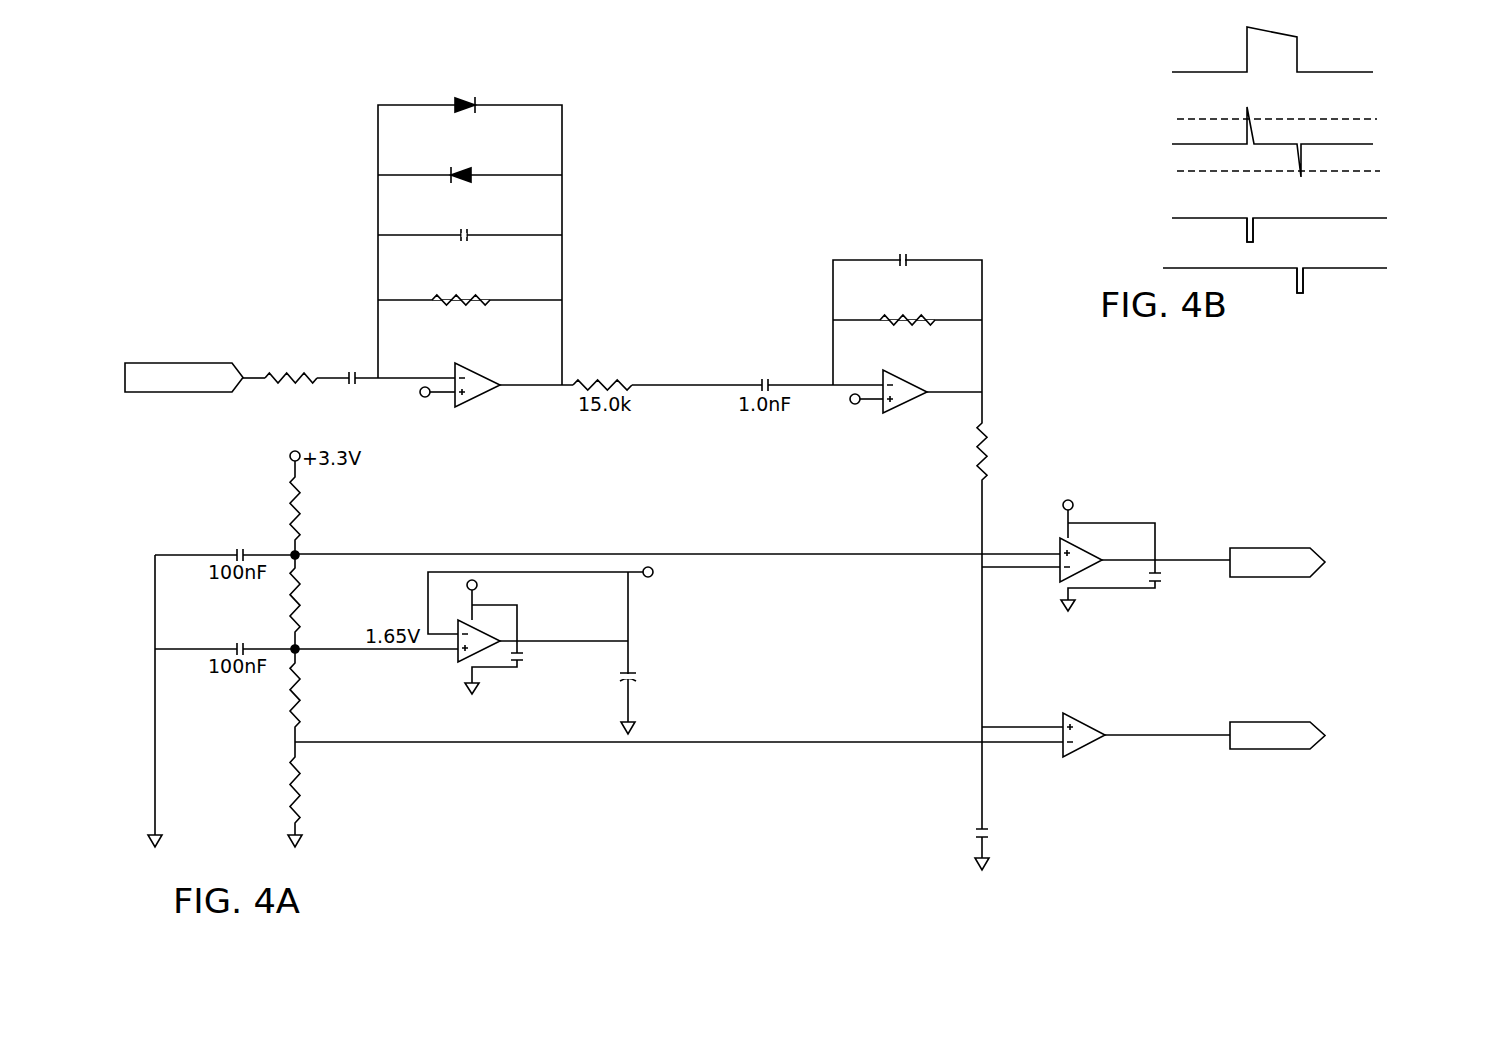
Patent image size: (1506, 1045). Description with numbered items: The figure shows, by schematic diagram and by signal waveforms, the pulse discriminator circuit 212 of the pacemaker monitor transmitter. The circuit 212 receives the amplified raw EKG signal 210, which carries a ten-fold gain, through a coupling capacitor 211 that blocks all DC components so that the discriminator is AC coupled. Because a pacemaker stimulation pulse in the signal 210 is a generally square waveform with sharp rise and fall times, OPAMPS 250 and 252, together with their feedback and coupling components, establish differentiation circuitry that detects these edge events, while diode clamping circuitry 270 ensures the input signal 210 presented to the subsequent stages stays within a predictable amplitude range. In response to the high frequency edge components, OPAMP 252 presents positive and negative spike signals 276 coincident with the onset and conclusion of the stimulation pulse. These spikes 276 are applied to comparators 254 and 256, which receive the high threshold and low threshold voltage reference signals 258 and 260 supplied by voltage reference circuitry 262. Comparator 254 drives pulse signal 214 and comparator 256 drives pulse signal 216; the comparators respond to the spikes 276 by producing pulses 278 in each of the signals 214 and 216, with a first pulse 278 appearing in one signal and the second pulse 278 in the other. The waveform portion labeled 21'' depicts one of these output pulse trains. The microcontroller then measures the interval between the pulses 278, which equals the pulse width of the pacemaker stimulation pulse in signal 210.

In FIG. 4A, the amplified raw EKG signal 210 is at (252, 378).
In FIG. 4B, the amplified raw EKG signal 210 is at (1308, 72).
In FIG. 4A, the capacitor 211 is at (332, 376).
In FIG. 4A, the pulse discriminator circuit 212 is at (262, 108).
In FIG. 4A, the pulse signal 214 is at (1200, 560).
In FIG. 4A, the pulse signal 216 is at (1207, 735).
In FIG. 4B, the pulse signal 216 is at (1313, 268).
In FIG. 4A, the OPAMP 250 is at (460, 408).
In FIG. 4A, the OPAMP 252 is at (918, 400).
In FIG. 4A, the comparator 254 is at (1058, 576).
In FIG. 4A, the comparator 256 is at (1075, 713).
In FIG. 4A, the high threshold voltage reference signal 258 is at (878, 553).
In FIG. 4B, the high threshold voltage reference signal 258 is at (1226, 118).
In FIG. 4A, the low threshold voltage reference signal 260 is at (920, 742).
In FIG. 4B, the low threshold voltage reference signal 260 is at (1373, 171).
In FIG. 4A, the voltage reference circuitry 262 is at (676, 627).
In FIG. 4A, the diode clamping circuitry 270 is at (590, 164).
In FIG. 4A, the spike signals 276 is at (980, 529).
In FIG. 4B, the spike signals 276 is at (1247, 108).
In FIG. 4B, the pulses 278 is at (1253, 226).
In FIG. 4B, the high pulse output waveform 21'' is at (1292, 210).